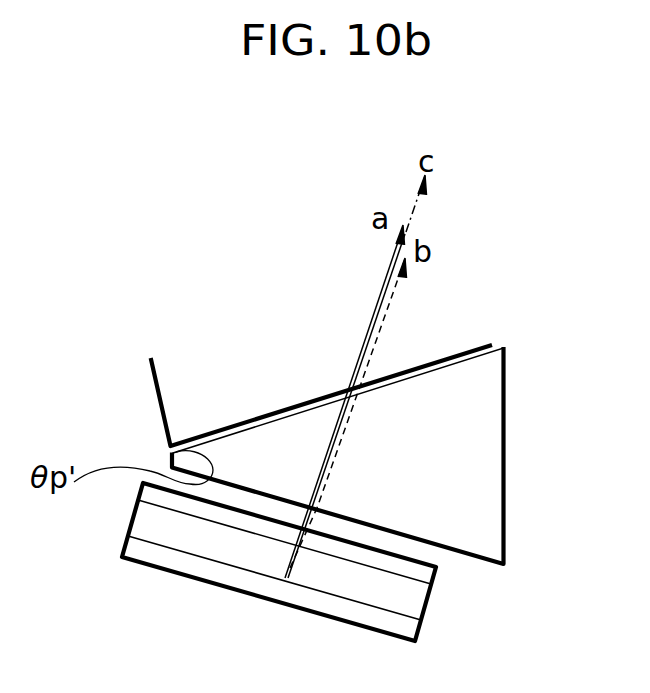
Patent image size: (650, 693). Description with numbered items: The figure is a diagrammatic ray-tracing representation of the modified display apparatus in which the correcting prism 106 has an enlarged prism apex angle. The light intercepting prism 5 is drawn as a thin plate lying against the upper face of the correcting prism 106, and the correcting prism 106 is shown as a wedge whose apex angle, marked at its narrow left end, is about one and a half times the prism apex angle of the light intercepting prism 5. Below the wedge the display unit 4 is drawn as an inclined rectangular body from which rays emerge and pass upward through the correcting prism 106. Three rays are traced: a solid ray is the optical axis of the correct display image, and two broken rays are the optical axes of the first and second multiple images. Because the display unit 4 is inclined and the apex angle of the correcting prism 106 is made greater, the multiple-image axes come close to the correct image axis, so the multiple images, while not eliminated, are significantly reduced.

The display unit 4 is at (429, 600).
The light intercepting prism 5 is at (157, 400).
The correcting prism 106 is at (504, 393).